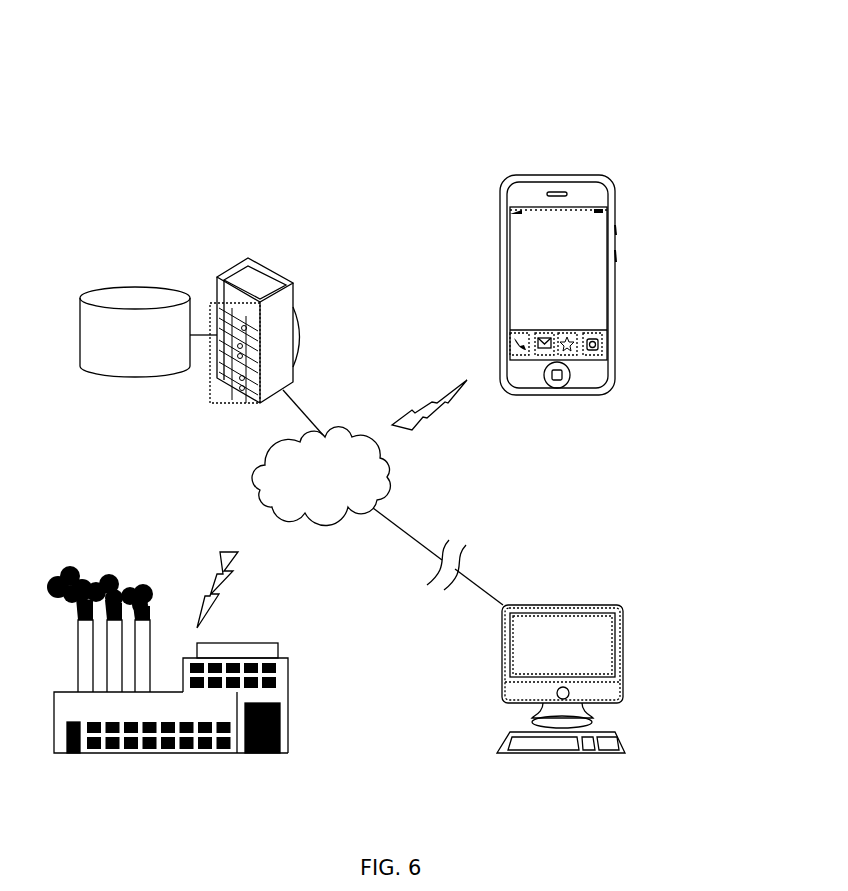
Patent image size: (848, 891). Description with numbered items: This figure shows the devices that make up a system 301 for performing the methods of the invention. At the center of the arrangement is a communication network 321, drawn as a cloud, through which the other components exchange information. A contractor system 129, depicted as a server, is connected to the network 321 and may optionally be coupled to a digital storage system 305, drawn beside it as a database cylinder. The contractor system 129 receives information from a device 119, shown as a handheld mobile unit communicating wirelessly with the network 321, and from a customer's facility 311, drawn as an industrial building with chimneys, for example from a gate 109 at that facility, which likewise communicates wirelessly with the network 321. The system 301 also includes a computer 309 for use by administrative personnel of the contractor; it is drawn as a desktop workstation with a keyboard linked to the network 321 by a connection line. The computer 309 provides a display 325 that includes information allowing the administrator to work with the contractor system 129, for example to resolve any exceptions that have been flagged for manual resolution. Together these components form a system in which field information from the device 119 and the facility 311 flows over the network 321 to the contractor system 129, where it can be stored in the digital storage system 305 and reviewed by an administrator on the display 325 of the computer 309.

The system 301 is at (385, 88).
The digital storage system 305 is at (151, 349).
The contractor system 129 is at (267, 265).
The device 119 is at (615, 307).
The communication network 321 is at (343, 494).
The computer 309 is at (588, 604).
The display 325 is at (595, 650).
The gate 109 is at (280, 743).
The customer's facility 311 is at (288, 690).